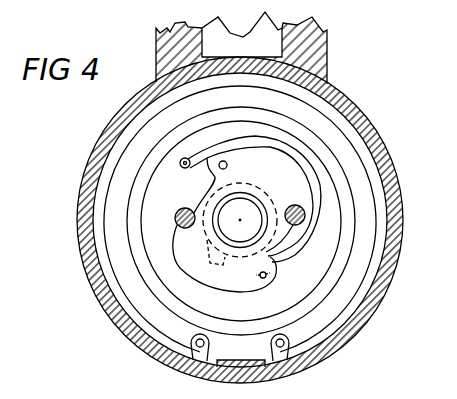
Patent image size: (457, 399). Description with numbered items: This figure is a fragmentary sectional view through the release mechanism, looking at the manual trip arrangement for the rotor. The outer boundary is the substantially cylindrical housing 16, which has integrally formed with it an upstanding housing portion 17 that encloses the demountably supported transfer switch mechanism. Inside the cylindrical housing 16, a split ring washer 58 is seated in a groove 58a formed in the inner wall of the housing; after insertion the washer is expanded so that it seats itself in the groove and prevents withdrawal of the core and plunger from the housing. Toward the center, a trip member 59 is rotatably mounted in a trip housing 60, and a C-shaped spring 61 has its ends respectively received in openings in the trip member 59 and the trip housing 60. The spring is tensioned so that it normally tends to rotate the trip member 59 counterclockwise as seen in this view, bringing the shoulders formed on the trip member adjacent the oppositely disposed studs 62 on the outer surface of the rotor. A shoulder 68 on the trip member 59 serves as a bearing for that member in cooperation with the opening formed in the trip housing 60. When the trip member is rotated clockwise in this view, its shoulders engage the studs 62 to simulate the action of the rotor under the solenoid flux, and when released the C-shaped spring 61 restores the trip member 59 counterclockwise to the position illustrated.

The cylindrical housing 16 is at (378, 133).
The upstanding housing portion 17 is at (329, 57).
The split ring washer 58 is at (375, 265).
The groove 58a is at (393, 234).
The trip member 59 is at (276, 280).
The trip housing 60 is at (322, 208).
The C-shaped spring 61 is at (321, 223).
The studs 62 is at (179, 209).
The shoulder 68 is at (210, 264).